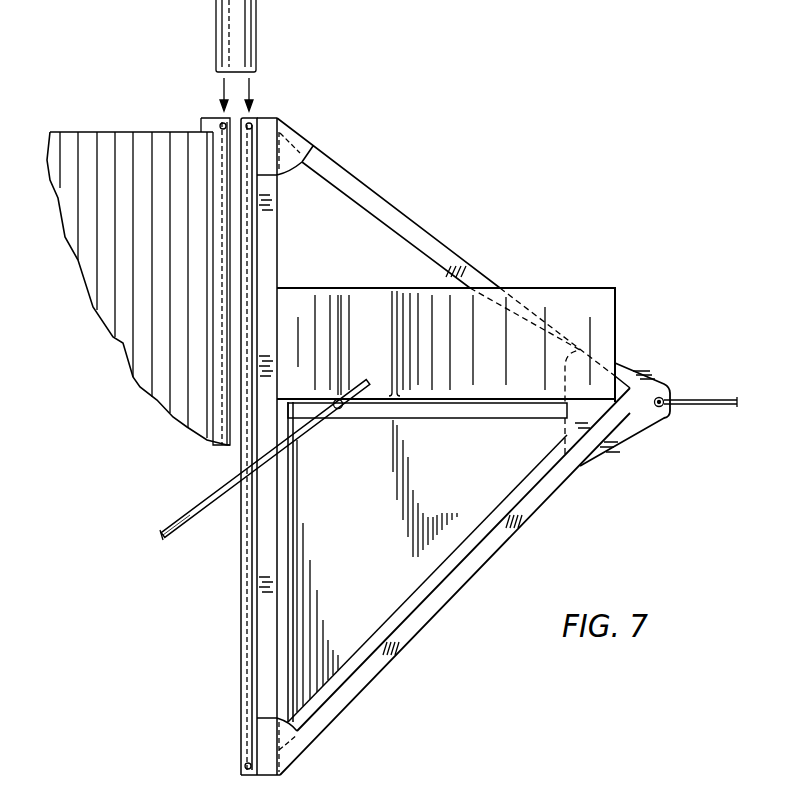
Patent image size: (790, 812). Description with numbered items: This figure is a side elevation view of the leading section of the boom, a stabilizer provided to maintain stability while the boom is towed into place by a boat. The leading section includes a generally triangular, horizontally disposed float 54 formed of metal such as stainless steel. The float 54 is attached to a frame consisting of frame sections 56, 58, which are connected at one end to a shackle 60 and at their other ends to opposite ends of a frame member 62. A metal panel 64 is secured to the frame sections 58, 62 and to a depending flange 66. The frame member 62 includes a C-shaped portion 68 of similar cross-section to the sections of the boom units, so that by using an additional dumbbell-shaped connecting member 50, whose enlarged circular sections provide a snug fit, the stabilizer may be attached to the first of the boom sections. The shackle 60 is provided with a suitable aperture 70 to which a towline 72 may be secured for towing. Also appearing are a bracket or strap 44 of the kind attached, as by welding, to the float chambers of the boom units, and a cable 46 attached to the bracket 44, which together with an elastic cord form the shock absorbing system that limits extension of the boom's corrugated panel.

The bracket or strap 44 is at (360, 390).
The cable 46 is at (197, 508).
The dumbbell-shaped connecting member 50 is at (258, 24).
The float 54 is at (585, 297).
The frame section 56 is at (432, 236).
The frame section 58 is at (440, 604).
The shackle 60 is at (637, 366).
The frame member 62 is at (268, 527).
The metal panel 64 is at (363, 551).
The depending flange 66 is at (482, 410).
The C-shaped portion 68 is at (247, 598).
The aperture 70 is at (663, 398).
The towline 72 is at (722, 407).